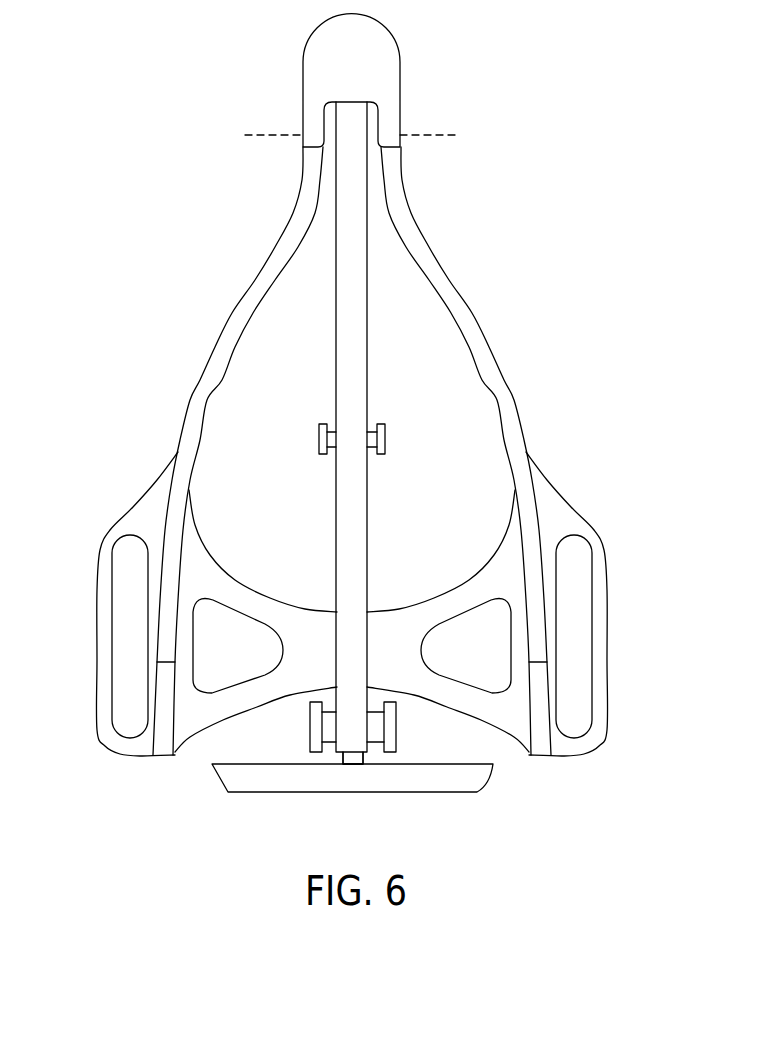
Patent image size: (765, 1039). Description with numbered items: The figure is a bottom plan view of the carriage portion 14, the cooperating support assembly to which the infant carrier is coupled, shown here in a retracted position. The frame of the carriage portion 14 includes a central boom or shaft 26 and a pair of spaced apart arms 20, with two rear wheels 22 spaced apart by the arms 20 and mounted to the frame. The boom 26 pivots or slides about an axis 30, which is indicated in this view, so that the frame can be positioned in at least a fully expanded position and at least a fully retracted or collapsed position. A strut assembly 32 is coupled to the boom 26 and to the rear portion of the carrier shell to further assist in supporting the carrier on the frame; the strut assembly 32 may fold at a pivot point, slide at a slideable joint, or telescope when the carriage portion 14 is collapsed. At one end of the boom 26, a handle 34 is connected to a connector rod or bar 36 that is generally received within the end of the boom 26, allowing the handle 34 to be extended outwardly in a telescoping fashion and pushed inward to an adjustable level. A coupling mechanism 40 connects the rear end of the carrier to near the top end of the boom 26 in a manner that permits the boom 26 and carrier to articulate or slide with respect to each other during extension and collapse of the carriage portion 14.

The carriage portion 14 is at (537, 322).
The arms 20 is at (190, 403).
The rear wheels 22 is at (123, 607).
The central boom 26 is at (369, 503).
The axis 30 is at (440, 135).
The strut assembly 32 is at (318, 437).
The handle 34 is at (448, 780).
The connector rod 36 is at (348, 757).
The coupling mechanism 40 is at (317, 728).